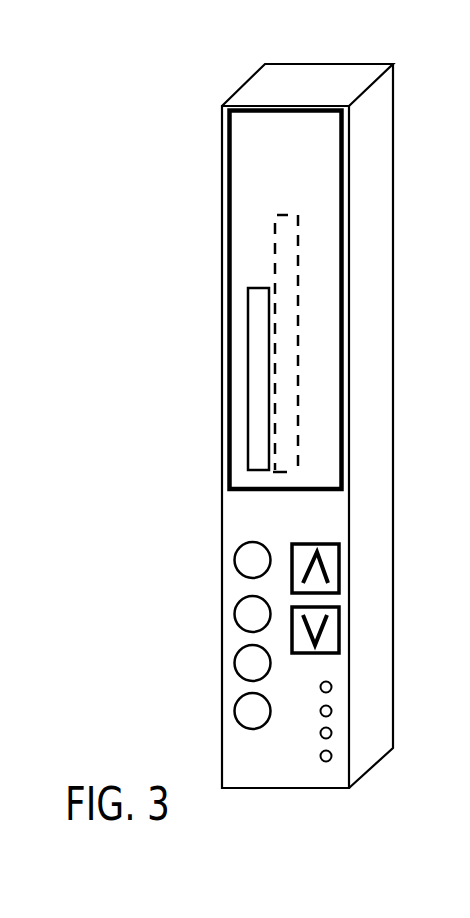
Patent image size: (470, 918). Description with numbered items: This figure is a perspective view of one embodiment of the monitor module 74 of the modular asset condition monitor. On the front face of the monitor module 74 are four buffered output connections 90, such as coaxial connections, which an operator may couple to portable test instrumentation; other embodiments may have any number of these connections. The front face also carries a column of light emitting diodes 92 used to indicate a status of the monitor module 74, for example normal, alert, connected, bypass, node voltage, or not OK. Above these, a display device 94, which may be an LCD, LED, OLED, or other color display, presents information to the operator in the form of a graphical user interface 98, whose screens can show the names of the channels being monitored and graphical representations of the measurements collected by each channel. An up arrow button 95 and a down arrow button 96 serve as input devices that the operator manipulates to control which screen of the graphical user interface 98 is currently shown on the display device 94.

The monitor module 74 is at (198, 73).
The display device 94 is at (350, 138).
The graphical user interface 98 is at (259, 178).
The buffered output connections 90 is at (212, 542).
The up arrow button 95 is at (327, 562).
The down arrow button 96 is at (325, 642).
The light emitting diodes 92 is at (356, 676).